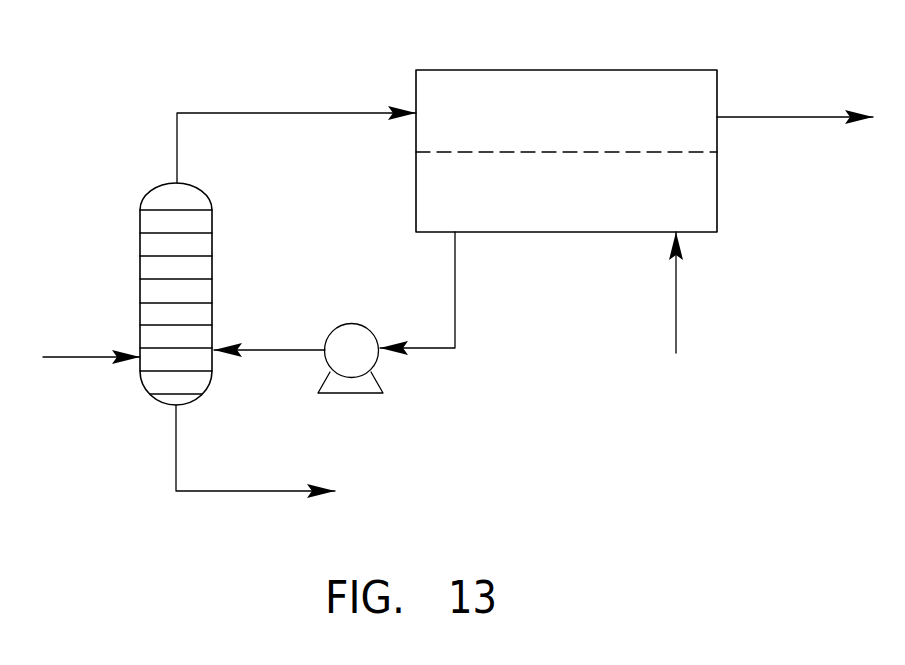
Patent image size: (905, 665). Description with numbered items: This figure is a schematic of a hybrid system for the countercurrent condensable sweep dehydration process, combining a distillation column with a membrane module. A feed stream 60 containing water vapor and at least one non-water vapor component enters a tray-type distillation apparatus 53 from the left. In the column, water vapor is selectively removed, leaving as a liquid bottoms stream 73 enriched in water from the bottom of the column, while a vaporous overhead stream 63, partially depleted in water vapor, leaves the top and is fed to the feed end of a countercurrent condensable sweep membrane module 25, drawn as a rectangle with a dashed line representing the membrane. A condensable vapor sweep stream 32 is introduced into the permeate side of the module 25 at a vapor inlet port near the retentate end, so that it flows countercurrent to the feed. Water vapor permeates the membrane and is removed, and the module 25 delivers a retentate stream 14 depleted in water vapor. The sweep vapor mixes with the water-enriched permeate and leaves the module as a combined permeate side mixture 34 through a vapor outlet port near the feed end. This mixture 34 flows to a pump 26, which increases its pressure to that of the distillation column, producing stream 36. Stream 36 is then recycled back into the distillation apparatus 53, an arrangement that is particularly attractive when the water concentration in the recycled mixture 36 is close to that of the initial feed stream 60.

The distillation apparatus 53 is at (147, 202).
The countercurrent condensable sweep membrane module 25 is at (575, 70).
The vaporous overhead stream 63 is at (296, 130).
The retentate stream 14 is at (795, 97).
The condensable vapor sweep stream 32 is at (702, 292).
The combined permeate side mixture 34 is at (442, 290).
The pump 26 is at (347, 393).
The stream 36 is at (269, 331).
The feed stream 60 is at (91, 335).
The liquid bottoms stream 73 is at (255, 448).